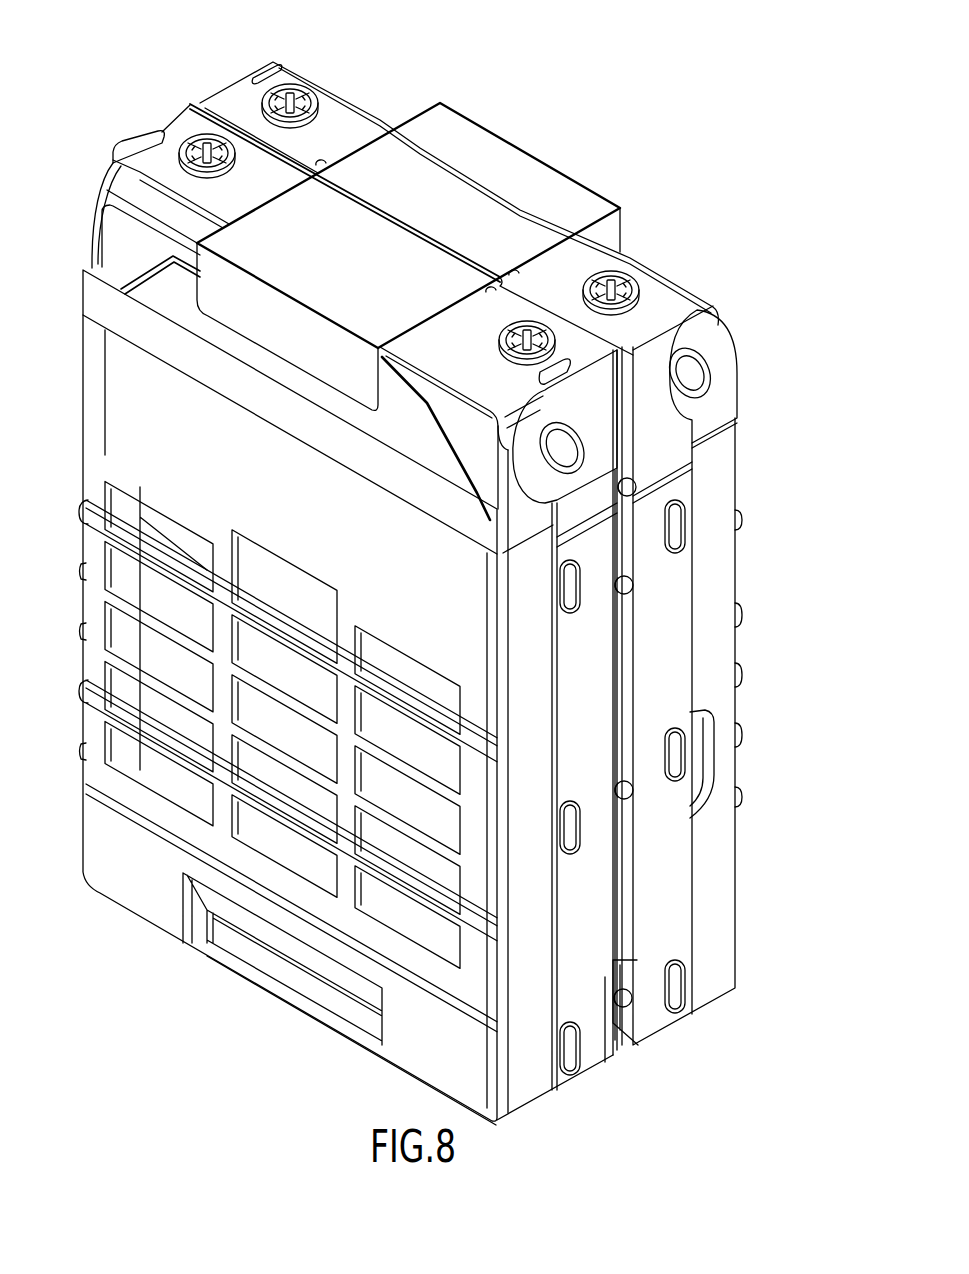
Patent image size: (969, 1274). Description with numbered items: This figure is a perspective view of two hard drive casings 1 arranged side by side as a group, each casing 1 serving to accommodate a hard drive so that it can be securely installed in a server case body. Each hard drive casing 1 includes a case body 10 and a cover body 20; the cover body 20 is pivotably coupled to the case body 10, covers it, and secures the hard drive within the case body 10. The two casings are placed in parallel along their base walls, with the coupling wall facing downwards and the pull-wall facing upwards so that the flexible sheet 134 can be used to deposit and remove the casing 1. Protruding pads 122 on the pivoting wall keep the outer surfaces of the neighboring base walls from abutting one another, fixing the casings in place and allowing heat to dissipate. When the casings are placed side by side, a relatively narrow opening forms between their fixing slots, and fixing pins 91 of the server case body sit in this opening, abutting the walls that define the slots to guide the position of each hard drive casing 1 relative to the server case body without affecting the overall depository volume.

The hard drive casing 1 is at (428, 586).
The case body 10 is at (595, 1082).
The cover body 20 is at (535, 1112).
The fixing pin 91 is at (622, 586).
The protruding pad 122 is at (673, 757).
The flexible sheet 134 is at (250, 245).